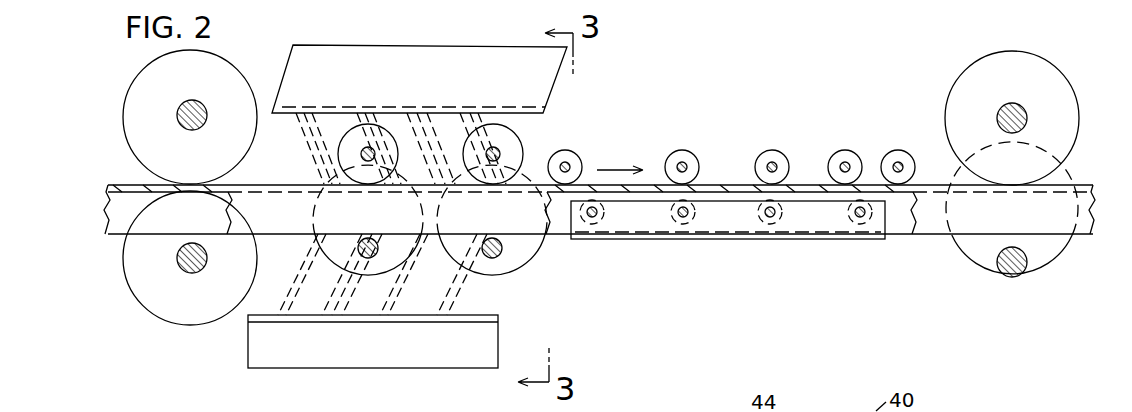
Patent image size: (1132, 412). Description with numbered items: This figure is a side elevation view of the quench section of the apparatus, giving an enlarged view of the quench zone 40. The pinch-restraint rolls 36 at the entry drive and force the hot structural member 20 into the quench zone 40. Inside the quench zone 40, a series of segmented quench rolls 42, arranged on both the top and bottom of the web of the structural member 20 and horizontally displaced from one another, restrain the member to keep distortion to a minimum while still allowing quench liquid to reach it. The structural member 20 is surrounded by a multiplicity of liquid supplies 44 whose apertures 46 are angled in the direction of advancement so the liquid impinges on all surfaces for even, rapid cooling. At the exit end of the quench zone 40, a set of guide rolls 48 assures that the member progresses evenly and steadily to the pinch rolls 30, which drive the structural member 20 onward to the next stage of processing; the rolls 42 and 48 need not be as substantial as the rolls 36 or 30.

The structural member 20 is at (273, 193).
The pinch rolls 30 is at (1063, 113).
The pinch-restraint rolls 36 is at (136, 116).
The quench zone 40 is at (468, 36).
The segmented quench rolls 42 is at (380, 130).
The liquid supplies 44 is at (414, 62).
The apertures 46 is at (296, 110).
The guide rolls 48 is at (590, 200).